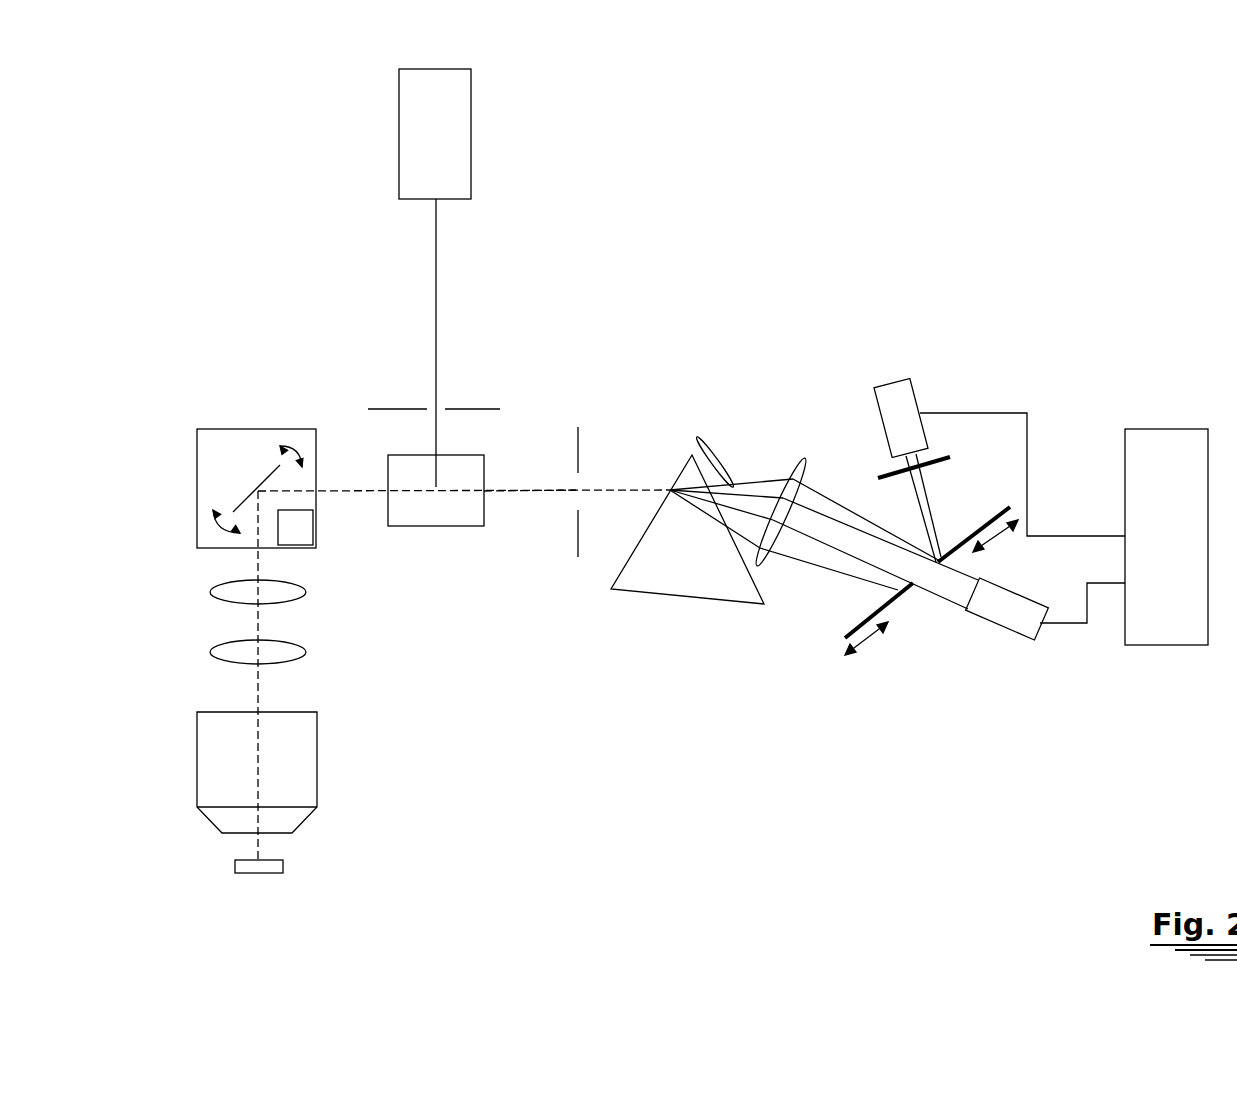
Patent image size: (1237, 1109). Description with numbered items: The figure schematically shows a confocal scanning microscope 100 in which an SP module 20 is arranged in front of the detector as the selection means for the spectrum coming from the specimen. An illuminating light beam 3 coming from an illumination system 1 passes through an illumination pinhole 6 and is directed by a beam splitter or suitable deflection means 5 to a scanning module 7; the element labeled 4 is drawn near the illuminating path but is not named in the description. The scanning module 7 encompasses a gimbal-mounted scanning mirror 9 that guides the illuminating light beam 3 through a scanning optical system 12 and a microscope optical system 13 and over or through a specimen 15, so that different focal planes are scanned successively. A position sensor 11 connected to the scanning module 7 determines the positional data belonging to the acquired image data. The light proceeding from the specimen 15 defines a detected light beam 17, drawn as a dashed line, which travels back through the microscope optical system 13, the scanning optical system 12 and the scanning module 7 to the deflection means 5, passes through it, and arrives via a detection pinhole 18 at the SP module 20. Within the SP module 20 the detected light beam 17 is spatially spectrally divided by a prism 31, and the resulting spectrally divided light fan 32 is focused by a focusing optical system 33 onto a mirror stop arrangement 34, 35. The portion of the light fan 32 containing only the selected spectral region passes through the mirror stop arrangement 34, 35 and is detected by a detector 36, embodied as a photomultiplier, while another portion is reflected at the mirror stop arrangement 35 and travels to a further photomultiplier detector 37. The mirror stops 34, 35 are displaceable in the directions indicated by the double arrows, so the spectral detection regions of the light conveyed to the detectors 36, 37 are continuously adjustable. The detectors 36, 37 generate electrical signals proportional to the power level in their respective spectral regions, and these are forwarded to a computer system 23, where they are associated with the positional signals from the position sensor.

The illumination system 1 is at (458, 112).
The illuminating light beam 3 is at (436, 236).
The fiber end 4 is at (434, 373).
The deflection means 5 is at (460, 520).
The illumination pinhole 6 is at (388, 411).
The scanning module 7 is at (222, 452).
The scanning mirror 9 is at (245, 495).
The position sensor 11 is at (302, 532).
The scanning optical system 12 is at (233, 590).
The microscope optical system 13 is at (222, 739).
The specimen 15 is at (243, 862).
The detected light beam 17 is at (497, 486).
The detection pinhole 18 is at (578, 448).
The SP module 20 is at (833, 445).
The computer system 23 is at (1185, 450).
The prism 31 is at (687, 588).
The spectrally divided light fan 32 is at (697, 437).
The focusing optical system 33 is at (758, 570).
The mirror stop arrangement 34 is at (893, 590).
The mirror stop arrangement 35 is at (968, 542).
The detector 36 is at (975, 610).
The detector 37 is at (887, 393).
The confocal scanning microscope 100 is at (516, 370).